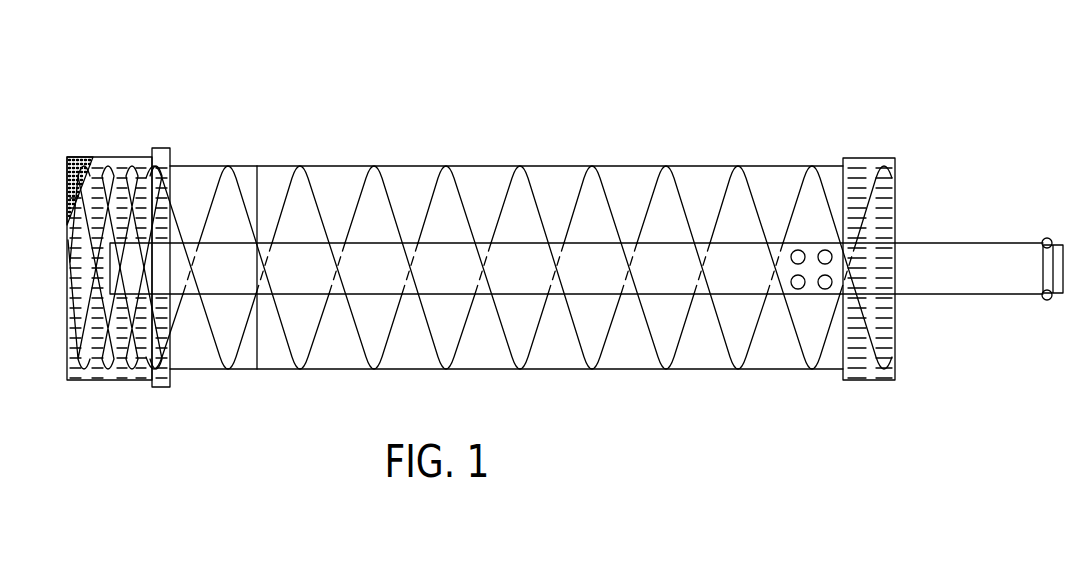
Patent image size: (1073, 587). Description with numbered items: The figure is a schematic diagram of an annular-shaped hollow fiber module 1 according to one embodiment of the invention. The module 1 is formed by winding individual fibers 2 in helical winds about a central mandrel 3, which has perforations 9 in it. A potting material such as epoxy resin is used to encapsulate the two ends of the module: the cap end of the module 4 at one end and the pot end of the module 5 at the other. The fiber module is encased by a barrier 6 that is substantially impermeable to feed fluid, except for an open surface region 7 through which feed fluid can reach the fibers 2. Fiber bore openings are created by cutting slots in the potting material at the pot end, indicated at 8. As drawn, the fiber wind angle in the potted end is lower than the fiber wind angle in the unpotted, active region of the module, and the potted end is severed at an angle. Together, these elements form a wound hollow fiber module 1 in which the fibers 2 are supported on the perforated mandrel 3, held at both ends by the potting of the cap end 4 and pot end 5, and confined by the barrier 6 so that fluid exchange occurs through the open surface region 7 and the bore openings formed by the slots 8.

The hollow fiber module 1 is at (544, 134).
The fibers 2 is at (400, 203).
The central mandrel 3 is at (973, 270).
The cap end of the module 4 is at (875, 158).
The pot end of the module 5 is at (171, 160).
The barrier 6 is at (637, 166).
The open surface region 7 is at (251, 177).
The slots in the potting material 8 is at (83, 157).
The perforations 9 is at (797, 250).